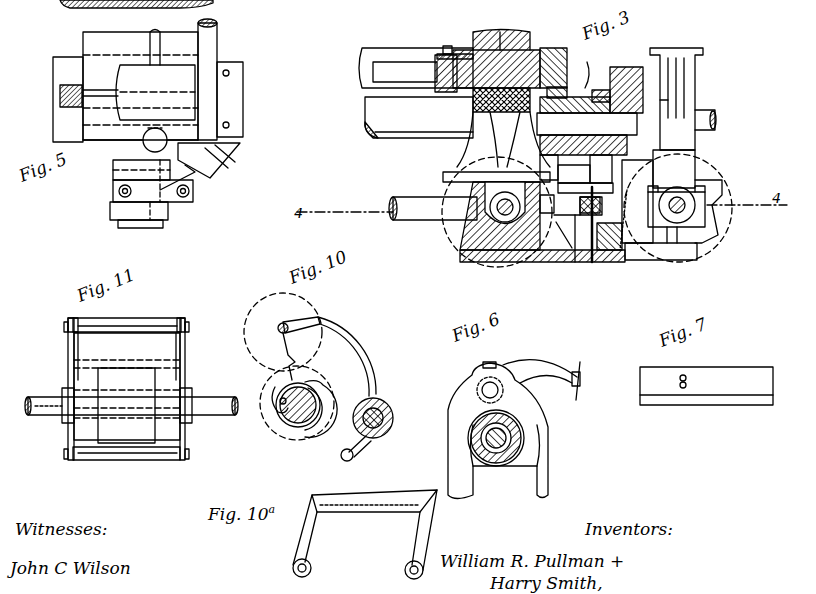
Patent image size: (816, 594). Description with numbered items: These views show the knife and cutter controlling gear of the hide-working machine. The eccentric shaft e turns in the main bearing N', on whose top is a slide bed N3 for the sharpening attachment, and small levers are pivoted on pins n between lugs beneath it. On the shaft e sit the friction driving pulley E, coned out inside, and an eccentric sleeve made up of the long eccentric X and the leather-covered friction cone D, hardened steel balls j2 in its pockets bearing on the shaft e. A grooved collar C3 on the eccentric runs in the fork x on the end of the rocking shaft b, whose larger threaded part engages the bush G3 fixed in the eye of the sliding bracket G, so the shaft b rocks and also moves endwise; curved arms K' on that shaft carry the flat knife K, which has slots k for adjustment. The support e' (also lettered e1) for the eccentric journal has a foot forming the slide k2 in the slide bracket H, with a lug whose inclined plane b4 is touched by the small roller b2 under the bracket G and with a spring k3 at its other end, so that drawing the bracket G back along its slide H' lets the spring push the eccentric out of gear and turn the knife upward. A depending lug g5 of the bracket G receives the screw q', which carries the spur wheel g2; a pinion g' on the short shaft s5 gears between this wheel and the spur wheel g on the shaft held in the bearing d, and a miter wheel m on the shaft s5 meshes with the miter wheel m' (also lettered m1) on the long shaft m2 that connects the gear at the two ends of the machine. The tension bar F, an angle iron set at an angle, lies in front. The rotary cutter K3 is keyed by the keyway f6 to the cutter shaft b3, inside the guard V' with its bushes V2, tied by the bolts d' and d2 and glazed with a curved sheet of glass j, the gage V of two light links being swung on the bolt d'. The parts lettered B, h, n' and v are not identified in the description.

In FIG. 5, the sliding bracket G is at (140, 85).
In FIG. 3, the sliding bracket G is at (508, 32).
In FIG. 3, the bush G3 is at (545, 48).
In FIG. 5, the slide H' is at (68, 99).
In FIG. 3, the slide H' is at (477, 147).
In FIG. 3, the slide bracket H is at (573, 223).
In FIG. 3, the flat knife K is at (416, 58).
In FIG. 6, the flat knife K is at (584, 375).
In FIG. 7, the flat knife K is at (706, 386).
In FIG. 3, the curved arms K' is at (453, 41).
In FIG. 6, the curved arms K' is at (540, 370).
In FIG. 11, the rotary cutter K3 is at (126, 405).
In FIG. 10, the rotary cutter K3 is at (290, 415).
In FIG. 7, the slots k is at (689, 383).
In FIG. 5, the slide k2 is at (110, 210).
In FIG. 3, the slide k2 is at (585, 187).
In FIG. 5, the spring k3 is at (140, 228).
In FIG. 3, the spring k3 is at (613, 220).
In FIG. 3, the rocking shaft b is at (405, 72).
In FIG. 6, the rocking shaft b is at (487, 391).
In FIG. 3, the collar B is at (442, 73).
In FIG. 5, the small roller b2 is at (145, 146).
In FIG. 3, the rotary cutter shaft b3 is at (545, 211).
In FIG. 11, the rotary cutter shaft b3 is at (220, 388).
In FIG. 10, the rotary cutter shaft b3 is at (312, 402).
In FIG. 5, the inclined plane b4 is at (141, 171).
In FIG. 3, the inclined plane b4 is at (574, 174).
In FIG. 3, the eccentric shaft e is at (587, 124).
In FIG. 3, the support e' is at (601, 169).
In FIG. 5, the support e1 is at (153, 191).
In FIG. 3, the friction driving pulley E is at (618, 67).
In FIG. 3, the tension bar F is at (419, 117).
In FIG. 3, the friction cone D is at (601, 85).
In FIG. 3, the long eccentric X is at (583, 66).
In FIG. 6, the long eccentric X is at (516, 460).
In FIG. 3, the fork x is at (549, 167).
In FIG. 6, the fork x is at (498, 431).
In FIG. 3, the grooved collar C3 is at (568, 84).
In FIG. 6, the grooved collar C3 is at (492, 462).
In FIG. 3, the slide beds N3 is at (683, 99).
In FIG. 3, the main bearing N' is at (676, 196).
In FIG. 3, the studs or pins n is at (670, 100).
In FIG. 3, the piece n' is at (609, 236).
In FIG. 11, the curved sheet of glass j is at (92, 358).
In FIG. 10, the curved sheet of glass j is at (365, 355).
In FIG. 3, the hardened steel balls j2 is at (647, 140).
In FIG. 6, the hardened steel balls j2 is at (507, 438).
In FIG. 3, the spur wheel g is at (678, 208).
In FIG. 10, the spur wheel g is at (364, 418).
In FIG. 3, the pinion g' is at (566, 254).
In FIG. 3, the spur wheel g2 is at (500, 262).
In FIG. 3, the depending lug g5 is at (497, 190).
In FIG. 5, the screw q' is at (53, 96).
In FIG. 3, the screw q' is at (500, 216).
In FIG. 5, the miter wheel m is at (193, 178).
In FIG. 3, the miter wheel m is at (559, 235).
In FIG. 3, the miter wheel m' is at (581, 221).
In FIG. 5, the miter wheel m1 is at (209, 160).
In FIG. 5, the long shaft m2 is at (220, 79).
In FIG. 3, the long shaft m2 is at (433, 208).
In FIG. 5, the plate h is at (230, 99).
In FIG. 5, the short shaft s5 is at (113, 170).
In FIG. 3, the short shaft s5 is at (592, 262).
In FIG. 3, the bearing d is at (637, 203).
In FIG. 11, the tie bolt d' is at (127, 338).
In FIG. 10, the tie bolt d' is at (272, 328).
In FIG. 11, the tie bolt d2 is at (92, 460).
In FIG. 10, the tie bolt d2 is at (356, 454).
In FIG. 11, the gage V is at (126, 381).
In FIG. 10A, the gage V is at (365, 534).
In FIG. 11, the guard or cutter box V' is at (127, 386).
In FIG. 10, the guard or cutter box V' is at (337, 362).
In FIG. 11, the bushes or liners V2 is at (66, 388).
In FIG. 10, the link v is at (308, 317).
In FIG. 11, the keyway f6 is at (45, 410).
In FIG. 10, the keyway f6 is at (280, 400).